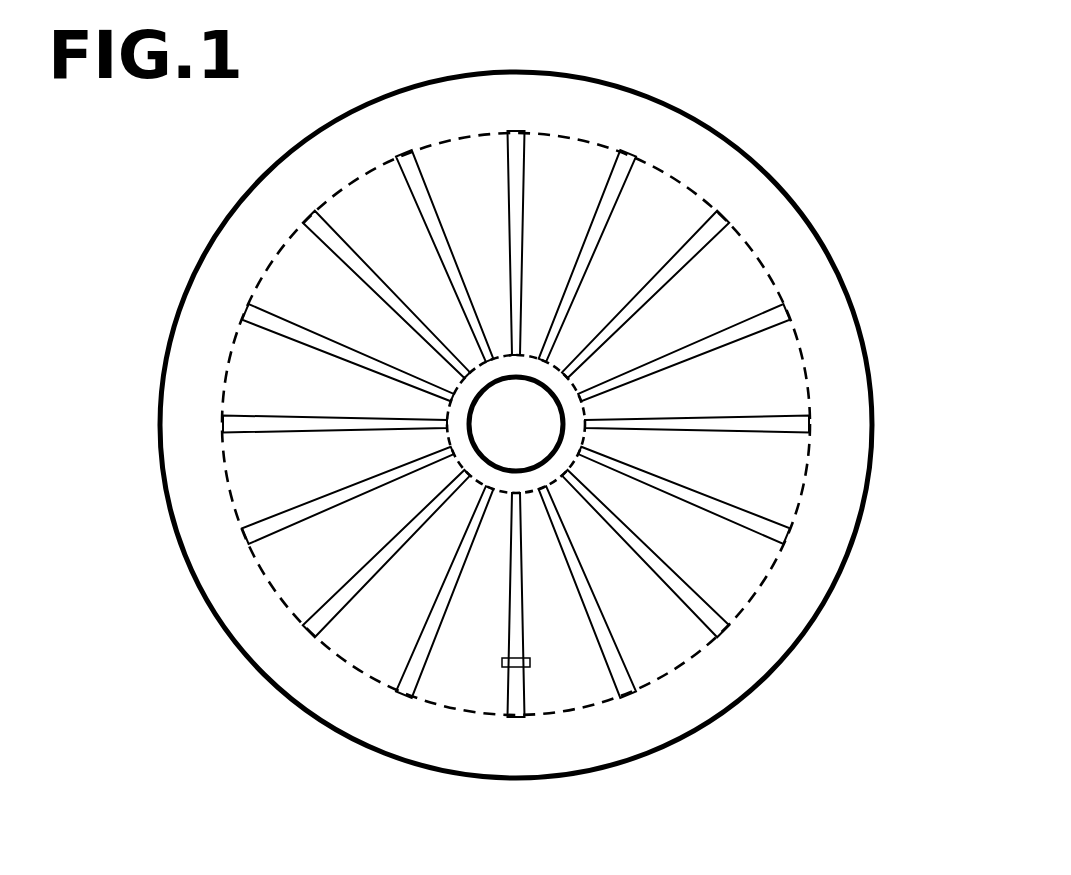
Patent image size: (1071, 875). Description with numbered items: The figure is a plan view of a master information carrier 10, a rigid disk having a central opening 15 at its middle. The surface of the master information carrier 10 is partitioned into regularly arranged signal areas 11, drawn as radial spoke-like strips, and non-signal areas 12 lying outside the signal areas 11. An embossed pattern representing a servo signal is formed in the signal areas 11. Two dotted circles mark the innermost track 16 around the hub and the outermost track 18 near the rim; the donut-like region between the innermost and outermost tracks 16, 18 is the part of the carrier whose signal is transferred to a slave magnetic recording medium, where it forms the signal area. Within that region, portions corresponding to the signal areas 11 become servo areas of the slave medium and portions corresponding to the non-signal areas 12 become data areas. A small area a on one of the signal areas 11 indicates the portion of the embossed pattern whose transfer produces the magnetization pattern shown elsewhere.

The master information carrier 10 is at (850, 138).
The signal areas 11 is at (632, 690).
The non-signal areas 12 is at (372, 643).
The shaft hole 15 is at (532, 383).
The innermost track 16 is at (495, 357).
The outermost track 18 is at (362, 176).
The area a is at (530, 662).